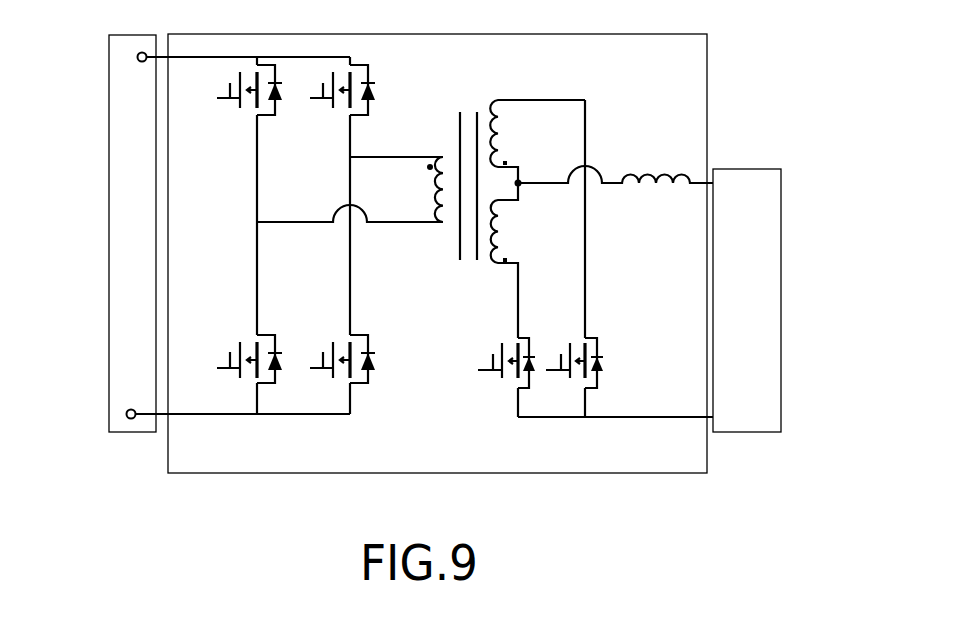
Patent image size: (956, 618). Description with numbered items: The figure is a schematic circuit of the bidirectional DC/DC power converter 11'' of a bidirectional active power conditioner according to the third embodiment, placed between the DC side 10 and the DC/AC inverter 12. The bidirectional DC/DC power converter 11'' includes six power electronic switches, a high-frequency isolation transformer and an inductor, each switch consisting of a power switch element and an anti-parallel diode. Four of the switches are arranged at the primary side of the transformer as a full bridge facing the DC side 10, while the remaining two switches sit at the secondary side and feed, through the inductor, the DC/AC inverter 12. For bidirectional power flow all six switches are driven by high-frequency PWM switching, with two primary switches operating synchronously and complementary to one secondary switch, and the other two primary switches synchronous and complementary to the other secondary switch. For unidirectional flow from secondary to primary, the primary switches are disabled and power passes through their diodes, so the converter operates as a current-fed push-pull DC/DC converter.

The DC side 10 is at (108, 399).
The bidirectional DC/DC power converter 11'' is at (425, 274).
The DC/AC inverter 12 is at (781, 292).